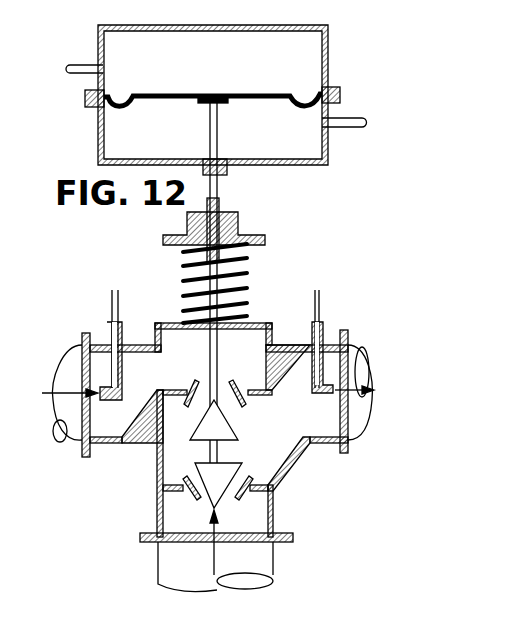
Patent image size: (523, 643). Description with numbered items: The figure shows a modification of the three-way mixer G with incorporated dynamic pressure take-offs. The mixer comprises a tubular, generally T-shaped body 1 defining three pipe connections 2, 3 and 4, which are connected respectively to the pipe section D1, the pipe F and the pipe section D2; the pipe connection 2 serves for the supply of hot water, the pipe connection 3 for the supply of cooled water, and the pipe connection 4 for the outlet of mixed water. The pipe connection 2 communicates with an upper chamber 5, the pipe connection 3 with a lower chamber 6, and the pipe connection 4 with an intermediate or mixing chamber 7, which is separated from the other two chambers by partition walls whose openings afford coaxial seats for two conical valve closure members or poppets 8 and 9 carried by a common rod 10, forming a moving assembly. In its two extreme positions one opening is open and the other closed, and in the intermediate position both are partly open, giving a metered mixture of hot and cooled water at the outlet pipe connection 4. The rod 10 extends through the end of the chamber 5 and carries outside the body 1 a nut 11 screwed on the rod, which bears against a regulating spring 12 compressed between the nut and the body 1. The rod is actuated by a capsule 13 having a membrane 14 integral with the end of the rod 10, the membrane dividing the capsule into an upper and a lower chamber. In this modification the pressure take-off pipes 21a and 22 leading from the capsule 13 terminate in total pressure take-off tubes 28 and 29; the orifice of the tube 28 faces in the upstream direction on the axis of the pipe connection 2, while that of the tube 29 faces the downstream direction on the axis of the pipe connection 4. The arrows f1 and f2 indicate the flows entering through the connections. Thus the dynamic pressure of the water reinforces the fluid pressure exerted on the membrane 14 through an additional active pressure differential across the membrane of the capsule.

The body 1 is at (158, 325).
The pipe connection 2 is at (105, 442).
The pipe connection 3 is at (163, 513).
The pipe connection 4 is at (330, 445).
The upper chamber 5 is at (160, 369).
The lower chamber 6 is at (187, 520).
The intermediate or mixing chamber 7 is at (183, 450).
The conical valve closure member 8 is at (232, 405).
The conical valve closure member 9 is at (237, 482).
The rod 10 is at (220, 128).
The nut 11 is at (240, 223).
The regulating spring 12 is at (250, 268).
The capsule 13 is at (104, 122).
The membrane 14 is at (183, 99).
The pressure take-off pipe 21a is at (108, 320).
The pressure take-off pipe 22 is at (352, 113).
The total pressure take-off tube 28 is at (120, 380).
The total pressure take-off tube 29 is at (310, 375).
The pipe section D1 is at (63, 334).
The pipe section D2 is at (357, 333).
The three-way mixer G is at (141, 331).
The pipe F is at (158, 568).
The first flow direction f1 is at (70, 380).
The second flow direction f2 is at (225, 542).